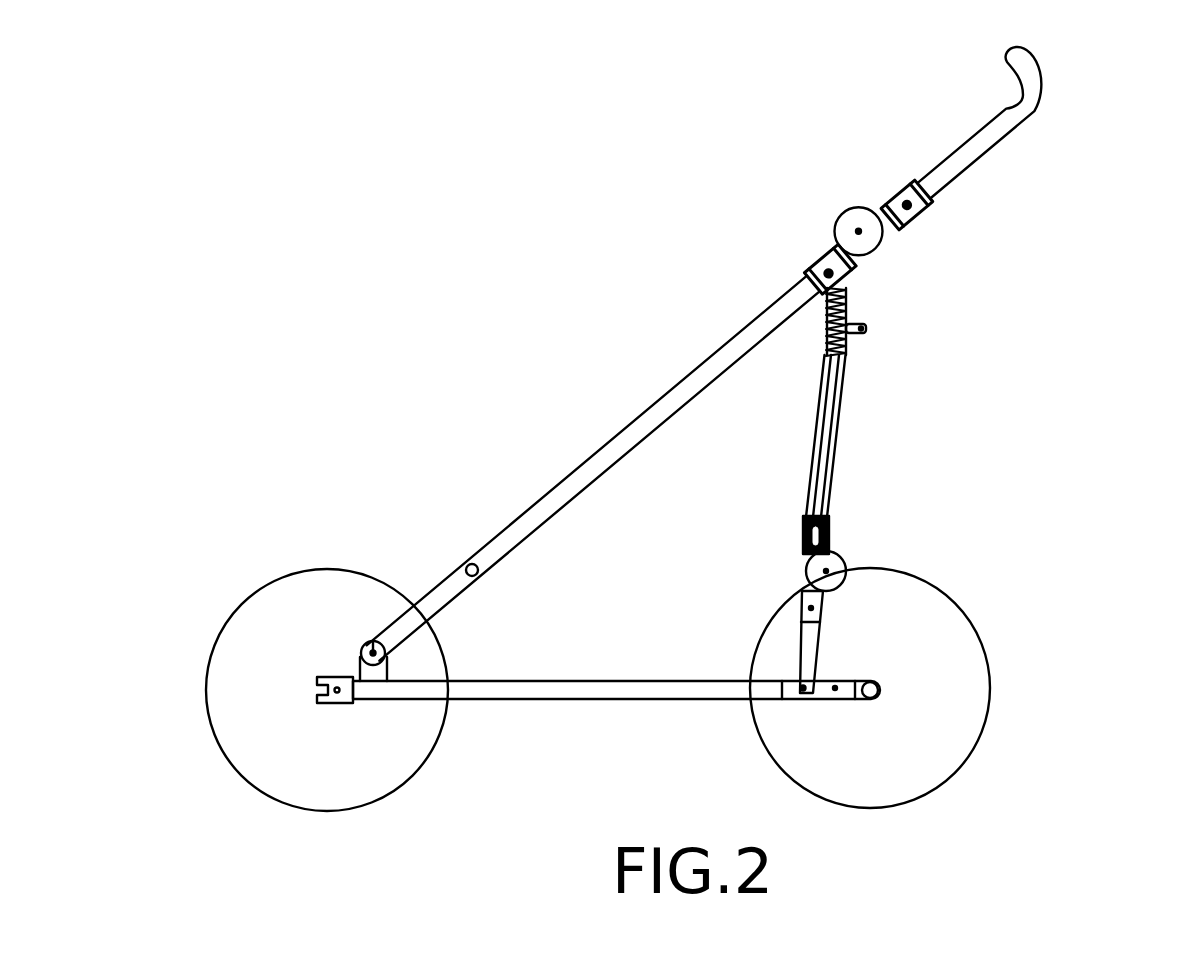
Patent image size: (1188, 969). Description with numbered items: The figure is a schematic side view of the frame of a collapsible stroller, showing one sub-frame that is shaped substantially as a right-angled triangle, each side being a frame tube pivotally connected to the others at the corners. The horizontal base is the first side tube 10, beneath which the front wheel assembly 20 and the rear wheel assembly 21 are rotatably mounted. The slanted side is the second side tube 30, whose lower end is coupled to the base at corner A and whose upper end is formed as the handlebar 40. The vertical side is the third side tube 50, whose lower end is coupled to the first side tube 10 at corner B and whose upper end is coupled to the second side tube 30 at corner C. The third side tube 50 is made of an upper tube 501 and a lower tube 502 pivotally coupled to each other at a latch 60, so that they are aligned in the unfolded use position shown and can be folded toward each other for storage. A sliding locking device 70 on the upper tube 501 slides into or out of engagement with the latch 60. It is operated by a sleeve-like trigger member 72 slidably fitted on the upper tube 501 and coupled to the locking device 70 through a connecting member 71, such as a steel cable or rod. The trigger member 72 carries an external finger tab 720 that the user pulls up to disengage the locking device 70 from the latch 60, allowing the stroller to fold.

The first side tube 10 is at (576, 690).
The front wheel assembly 20 is at (327, 780).
The rear wheel assembly 21 is at (937, 757).
The second side tube 30 is at (615, 450).
The handlebar 40 is at (1030, 93).
The third side tube 50 is at (836, 446).
The upper tube 501 is at (836, 396).
The lower tube 502 is at (800, 652).
The latch 60 is at (845, 558).
The sliding locking device 70 is at (805, 533).
The connecting member 71 is at (822, 450).
The trigger member 72 is at (815, 350).
The finger tab 720 is at (862, 329).
The corner A is at (373, 653).
The corner B is at (803, 688).
The corner C is at (847, 287).